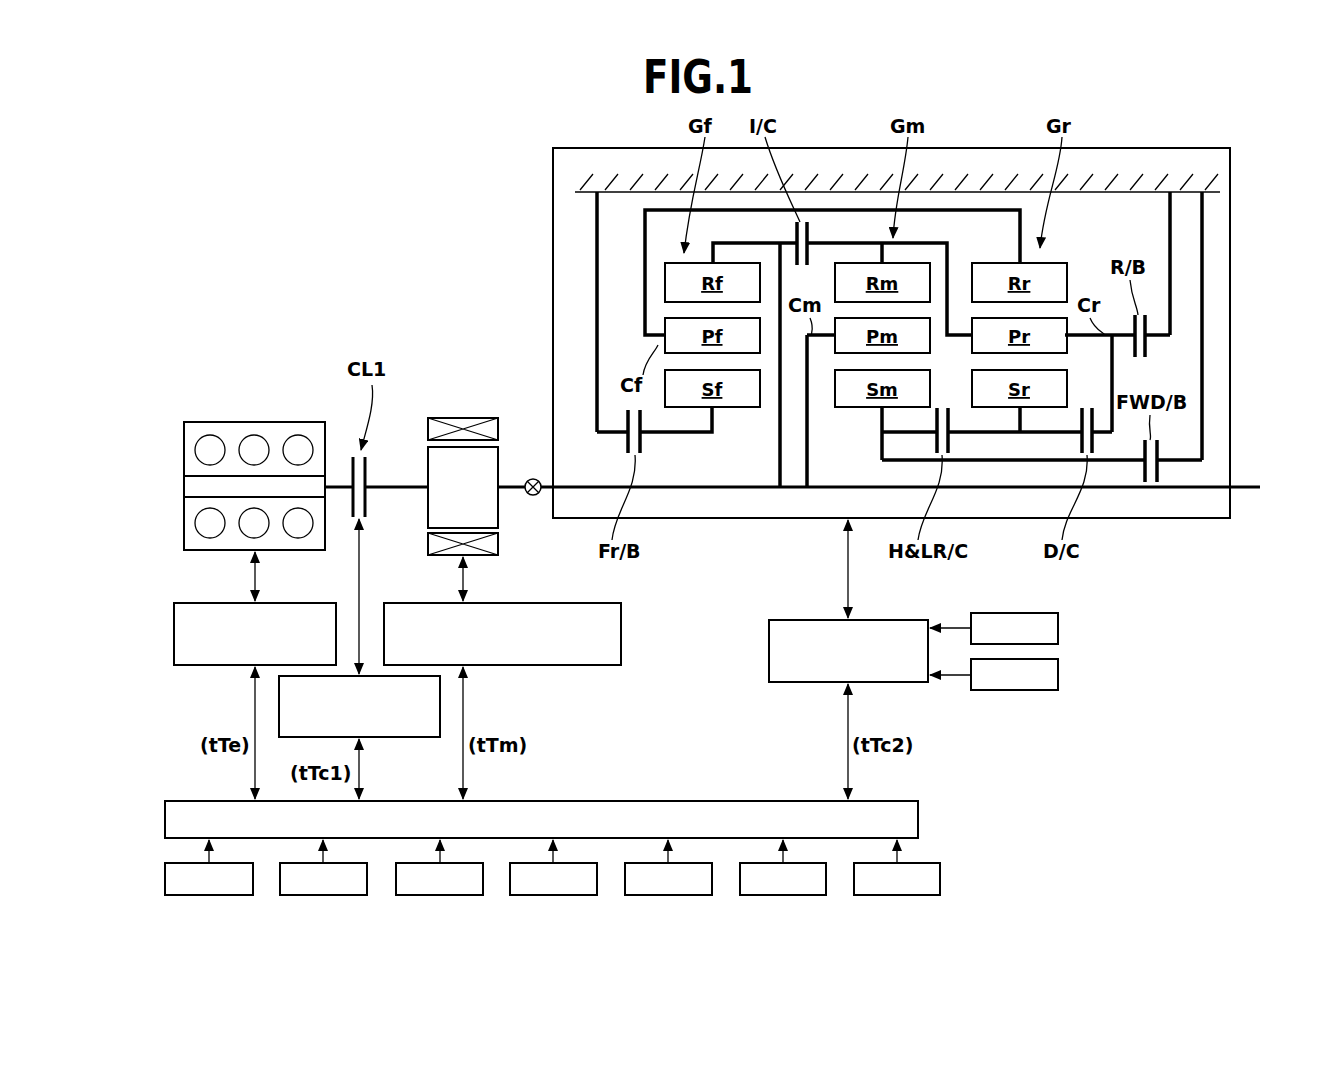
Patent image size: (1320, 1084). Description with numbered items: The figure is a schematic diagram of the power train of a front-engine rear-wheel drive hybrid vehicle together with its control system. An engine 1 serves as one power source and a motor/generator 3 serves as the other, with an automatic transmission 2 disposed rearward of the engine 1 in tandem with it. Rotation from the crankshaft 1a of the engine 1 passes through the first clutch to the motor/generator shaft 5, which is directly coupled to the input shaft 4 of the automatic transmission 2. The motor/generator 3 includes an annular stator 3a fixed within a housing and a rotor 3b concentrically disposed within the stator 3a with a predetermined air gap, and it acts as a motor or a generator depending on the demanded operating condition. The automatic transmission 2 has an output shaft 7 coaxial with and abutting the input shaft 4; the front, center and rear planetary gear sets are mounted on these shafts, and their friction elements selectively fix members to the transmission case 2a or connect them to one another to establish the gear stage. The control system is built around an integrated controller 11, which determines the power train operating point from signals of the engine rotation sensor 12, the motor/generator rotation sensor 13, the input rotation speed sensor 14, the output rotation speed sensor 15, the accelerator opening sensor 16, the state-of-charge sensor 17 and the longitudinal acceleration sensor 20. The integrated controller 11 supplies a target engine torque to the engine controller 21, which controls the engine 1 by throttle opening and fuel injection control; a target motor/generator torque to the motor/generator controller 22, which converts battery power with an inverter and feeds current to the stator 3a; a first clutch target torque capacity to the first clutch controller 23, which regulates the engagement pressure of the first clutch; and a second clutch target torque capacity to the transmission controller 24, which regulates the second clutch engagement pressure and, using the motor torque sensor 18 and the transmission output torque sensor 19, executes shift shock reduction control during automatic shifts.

The engine 1 is at (209, 418).
The crankshaft 1a is at (338, 483).
The automatic transmission 2 is at (553, 175).
The transmission case 2a is at (829, 186).
The motor/generator 3 is at (443, 445).
The stator 3a is at (444, 417).
The rotor 3b is at (427, 468).
The input shaft 4 is at (534, 496).
The motor/generator shaft 5 is at (510, 483).
The output shaft 7 is at (1185, 490).
The integrated controller 11 is at (918, 820).
The engine rotation sensor 12 is at (209, 895).
The motor/generator rotation sensor 13 is at (323, 895).
The input rotation speed sensor 14 is at (440, 895).
The output rotation speed sensor 15 is at (553, 895).
The accelerator opening sensor 16 is at (668, 895).
The state-of-charge sensor 17 is at (783, 895).
The motor torque sensor 18 is at (1058, 628).
The transmission output torque sensor 19 is at (1058, 675).
The longitudinal acceleration sensor 20 is at (897, 895).
The engine controller 21 is at (197, 603).
The motor/generator controller 22 is at (410, 603).
The first clutch controller 23 is at (385, 737).
The transmission controller 24 is at (788, 620).